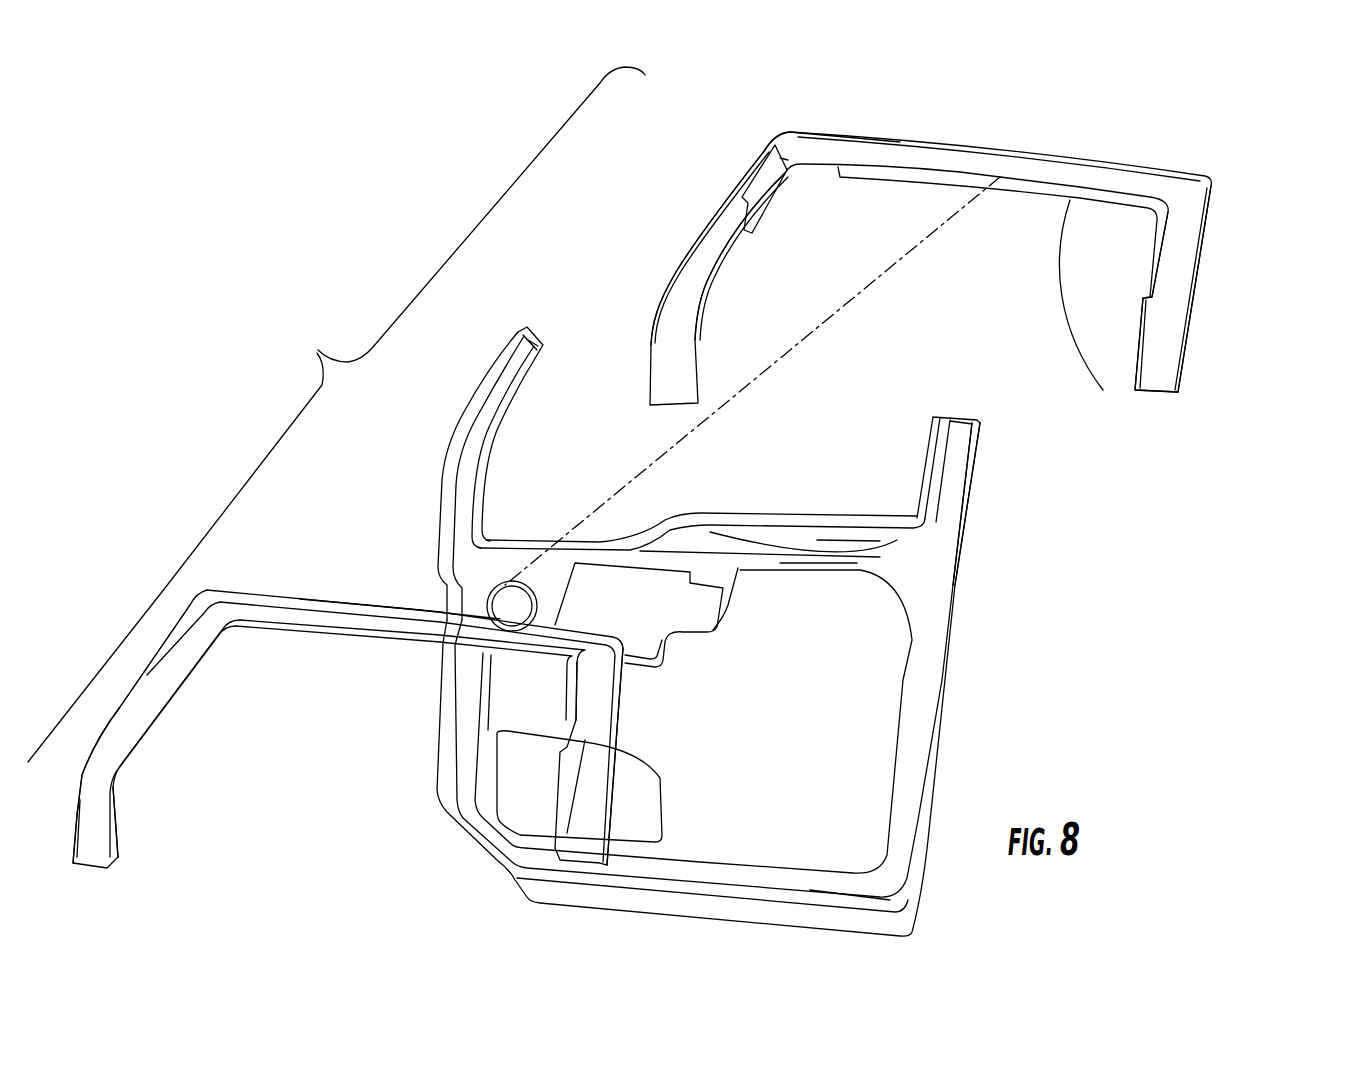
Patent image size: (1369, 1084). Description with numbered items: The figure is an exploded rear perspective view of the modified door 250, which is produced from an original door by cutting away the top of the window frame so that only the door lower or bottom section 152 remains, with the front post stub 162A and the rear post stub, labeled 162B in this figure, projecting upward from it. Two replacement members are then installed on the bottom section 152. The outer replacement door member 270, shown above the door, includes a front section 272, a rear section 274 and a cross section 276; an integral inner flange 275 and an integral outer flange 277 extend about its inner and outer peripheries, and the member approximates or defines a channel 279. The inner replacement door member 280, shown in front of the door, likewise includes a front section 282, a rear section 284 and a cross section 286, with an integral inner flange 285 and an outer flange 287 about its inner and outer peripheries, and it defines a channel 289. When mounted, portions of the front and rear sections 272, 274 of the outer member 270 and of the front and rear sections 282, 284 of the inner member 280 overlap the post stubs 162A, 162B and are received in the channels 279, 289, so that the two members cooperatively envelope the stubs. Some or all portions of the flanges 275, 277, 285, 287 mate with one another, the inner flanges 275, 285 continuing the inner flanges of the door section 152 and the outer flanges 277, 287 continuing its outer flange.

The door lower or bottom section 152 is at (769, 631).
The front post stub 162A is at (468, 452).
The rear door frame pillar 162B is at (960, 472).
The modified door 250 is at (312, 350).
The outer replacement door member 270 is at (983, 255).
The front section 272 is at (702, 242).
The rear section 274 is at (1163, 335).
The inner flange 275 is at (1093, 317).
The cross section 276 is at (930, 150).
The outer flange 277 is at (877, 133).
The channel 279 is at (1213, 267).
The inner replacement door member 280 is at (438, 665).
The front section 282 is at (133, 690).
The rear section 284 is at (593, 790).
The inner flange 285 is at (397, 643).
The cross section 286 is at (355, 610).
The outer flange 287 is at (426, 603).
The channel 289 is at (603, 624).